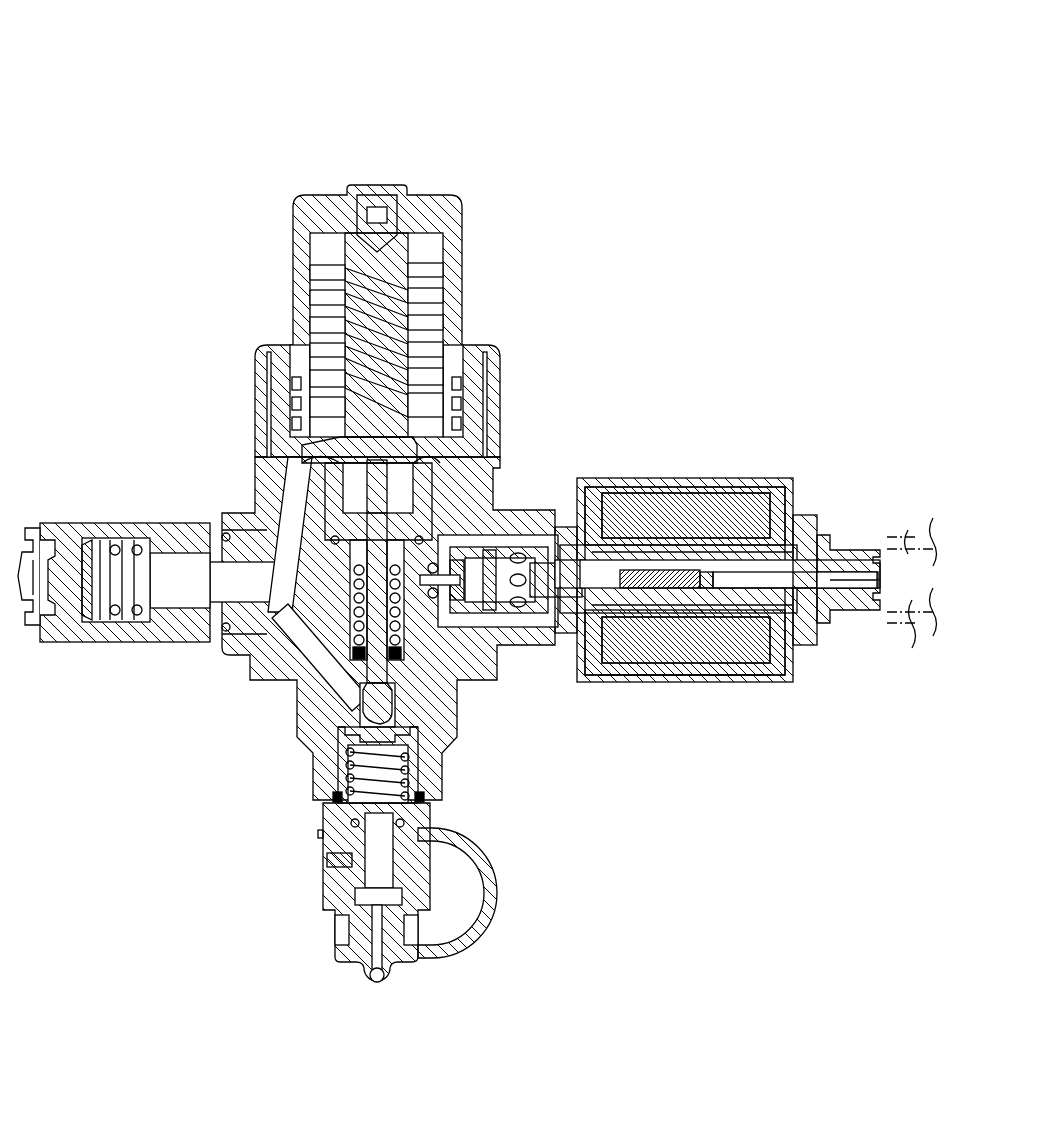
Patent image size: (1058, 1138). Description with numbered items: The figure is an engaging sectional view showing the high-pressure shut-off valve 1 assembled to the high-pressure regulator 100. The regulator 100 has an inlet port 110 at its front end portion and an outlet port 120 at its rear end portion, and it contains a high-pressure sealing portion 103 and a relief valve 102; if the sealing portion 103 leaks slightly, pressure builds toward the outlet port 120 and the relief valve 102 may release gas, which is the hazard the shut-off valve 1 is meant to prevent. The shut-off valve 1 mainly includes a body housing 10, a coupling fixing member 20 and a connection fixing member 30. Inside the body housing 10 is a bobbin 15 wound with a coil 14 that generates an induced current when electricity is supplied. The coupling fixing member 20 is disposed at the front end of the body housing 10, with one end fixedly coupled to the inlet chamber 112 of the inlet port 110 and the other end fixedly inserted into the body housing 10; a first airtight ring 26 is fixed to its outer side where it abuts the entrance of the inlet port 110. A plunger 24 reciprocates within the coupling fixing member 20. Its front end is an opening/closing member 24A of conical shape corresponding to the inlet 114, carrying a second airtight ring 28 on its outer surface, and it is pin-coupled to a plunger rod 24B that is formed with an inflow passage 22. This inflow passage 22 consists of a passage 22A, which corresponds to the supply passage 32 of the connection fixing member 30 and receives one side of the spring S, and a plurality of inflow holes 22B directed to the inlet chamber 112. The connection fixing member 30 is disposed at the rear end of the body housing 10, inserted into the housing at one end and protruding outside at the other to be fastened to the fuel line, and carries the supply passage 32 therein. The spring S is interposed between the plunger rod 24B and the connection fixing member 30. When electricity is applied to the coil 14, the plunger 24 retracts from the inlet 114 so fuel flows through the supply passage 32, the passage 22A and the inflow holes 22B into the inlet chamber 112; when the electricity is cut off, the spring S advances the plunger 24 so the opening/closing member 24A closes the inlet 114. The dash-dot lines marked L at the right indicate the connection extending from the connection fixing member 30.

The high-pressure regulator 100 is at (258, 112).
The high-pressure shut-off valve 1 is at (793, 455).
The body housing 10 is at (765, 686).
The coil 14 is at (720, 515).
The bobbin 15 is at (783, 530).
The coupling fixing member 20 is at (632, 530).
The inflow passage 22 is at (705, 780).
The passage 22A is at (635, 650).
The inflow holes 22B is at (596, 632).
The plunger 24 is at (593, 780).
The opening/closing member 24A is at (600, 600).
The plunger rod 24B is at (703, 582).
The first airtight ring 26 is at (407, 577).
The second airtight ring 28 is at (420, 640).
The connection fixing member 30 is at (847, 632).
The supply passage 32 is at (840, 575).
The spring S is at (712, 672).
The lead wire L is at (887, 600).
The relief valve 102 is at (360, 609).
The high-pressure sealing portion 103 is at (348, 560).
The inlet port 110 is at (500, 505).
The inlet chamber 112 is at (445, 515).
The inlet 114 is at (483, 372).
The outlet port 120 is at (100, 516).